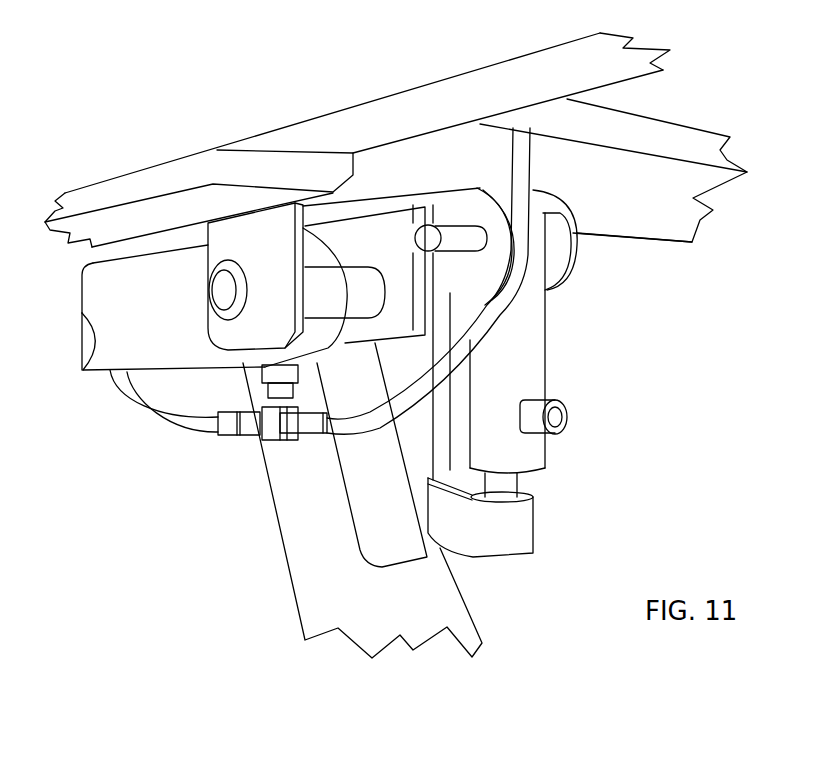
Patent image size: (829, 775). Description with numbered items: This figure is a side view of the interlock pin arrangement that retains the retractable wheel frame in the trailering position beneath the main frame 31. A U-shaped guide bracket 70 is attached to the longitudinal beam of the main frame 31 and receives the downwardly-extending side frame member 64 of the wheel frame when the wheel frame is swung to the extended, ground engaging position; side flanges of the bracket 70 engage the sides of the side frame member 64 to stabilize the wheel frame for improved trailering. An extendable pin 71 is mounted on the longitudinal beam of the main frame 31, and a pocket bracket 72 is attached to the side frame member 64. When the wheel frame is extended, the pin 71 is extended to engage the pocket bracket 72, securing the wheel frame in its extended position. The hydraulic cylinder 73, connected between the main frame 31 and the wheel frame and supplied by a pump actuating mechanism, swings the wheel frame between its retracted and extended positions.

The main frame 31 is at (310, 120).
The hydraulic cylinder 73 is at (178, 265).
The side frame member 64 is at (295, 508).
The U-shaped guide bracket 70 is at (385, 533).
The extendable pin 71 is at (510, 485).
The pocket bracket 72 is at (520, 542).